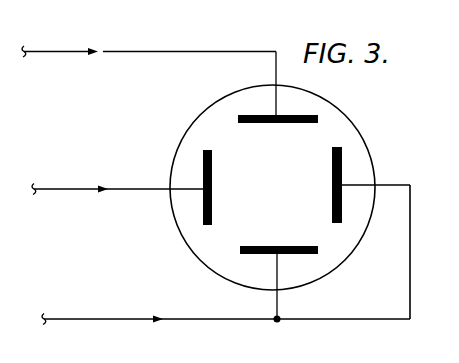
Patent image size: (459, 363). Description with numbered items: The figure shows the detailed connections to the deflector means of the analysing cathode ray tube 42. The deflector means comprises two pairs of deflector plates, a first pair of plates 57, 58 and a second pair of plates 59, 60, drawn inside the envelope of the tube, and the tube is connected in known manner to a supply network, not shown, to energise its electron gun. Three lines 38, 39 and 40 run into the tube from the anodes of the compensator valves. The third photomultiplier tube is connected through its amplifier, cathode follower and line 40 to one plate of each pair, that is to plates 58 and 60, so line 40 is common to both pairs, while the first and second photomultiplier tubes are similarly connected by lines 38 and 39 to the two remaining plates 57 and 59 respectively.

The line 38 is at (62, 189).
The line 39 is at (172, 51).
The line 40 is at (108, 307).
The analysing cathode ray tube 42 is at (371, 152).
The deflector plate 57 is at (211, 160).
The deflector plate 58 is at (333, 170).
The deflector plate 59 is at (292, 124).
The deflector plate 60 is at (284, 246).